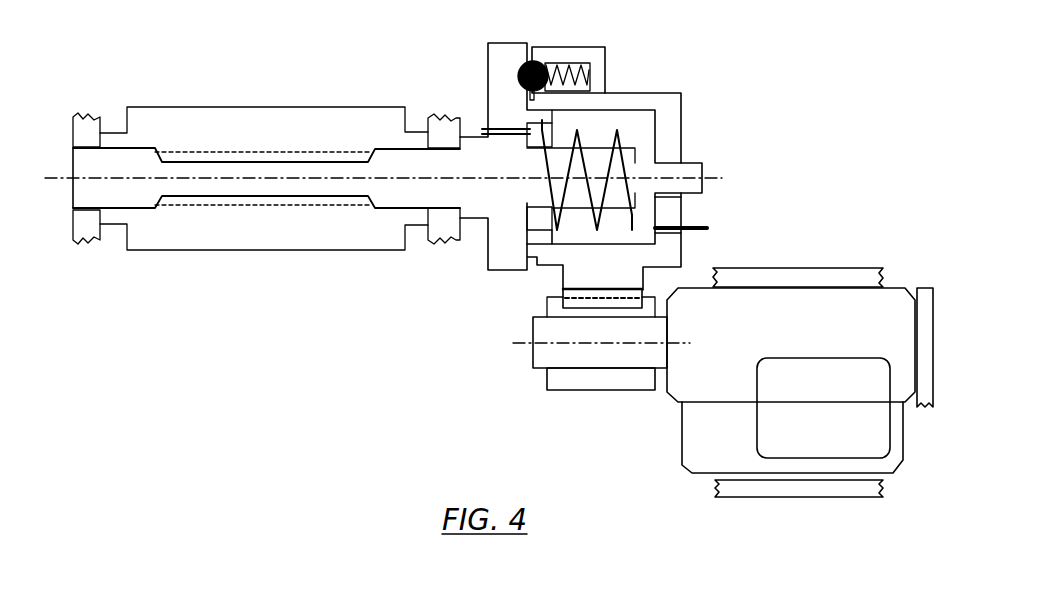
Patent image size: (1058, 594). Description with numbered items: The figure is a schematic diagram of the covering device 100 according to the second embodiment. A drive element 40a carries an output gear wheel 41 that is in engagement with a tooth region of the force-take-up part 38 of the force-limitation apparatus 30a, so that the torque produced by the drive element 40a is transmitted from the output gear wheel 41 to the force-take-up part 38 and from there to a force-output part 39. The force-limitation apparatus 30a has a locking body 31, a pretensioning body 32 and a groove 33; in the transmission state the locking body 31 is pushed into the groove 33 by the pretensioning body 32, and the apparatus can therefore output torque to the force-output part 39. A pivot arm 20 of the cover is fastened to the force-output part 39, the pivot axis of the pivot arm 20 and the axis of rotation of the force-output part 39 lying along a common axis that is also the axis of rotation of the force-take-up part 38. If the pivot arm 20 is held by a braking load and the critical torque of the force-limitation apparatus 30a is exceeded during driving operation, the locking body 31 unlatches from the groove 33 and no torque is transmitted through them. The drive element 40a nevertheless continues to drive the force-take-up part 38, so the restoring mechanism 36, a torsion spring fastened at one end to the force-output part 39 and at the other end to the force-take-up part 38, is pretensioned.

The covering device 100 is at (368, 453).
The pivot arm 20 is at (232, 118).
The force-limitation apparatus 30a is at (607, 166).
The locking body 31 is at (528, 72).
The pretensioning body 32 is at (582, 68).
The groove 33 is at (530, 53).
The restoring mechanism 36 is at (632, 218).
The force-take-up part 38 is at (676, 250).
The force-output part 39 is at (503, 260).
The output gear wheel 41 is at (557, 308).
The drive element 40a is at (816, 382).